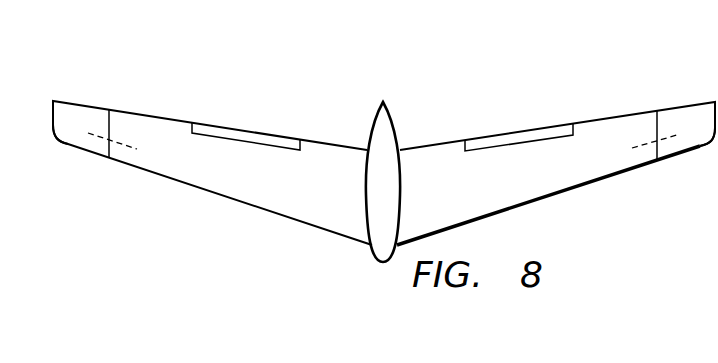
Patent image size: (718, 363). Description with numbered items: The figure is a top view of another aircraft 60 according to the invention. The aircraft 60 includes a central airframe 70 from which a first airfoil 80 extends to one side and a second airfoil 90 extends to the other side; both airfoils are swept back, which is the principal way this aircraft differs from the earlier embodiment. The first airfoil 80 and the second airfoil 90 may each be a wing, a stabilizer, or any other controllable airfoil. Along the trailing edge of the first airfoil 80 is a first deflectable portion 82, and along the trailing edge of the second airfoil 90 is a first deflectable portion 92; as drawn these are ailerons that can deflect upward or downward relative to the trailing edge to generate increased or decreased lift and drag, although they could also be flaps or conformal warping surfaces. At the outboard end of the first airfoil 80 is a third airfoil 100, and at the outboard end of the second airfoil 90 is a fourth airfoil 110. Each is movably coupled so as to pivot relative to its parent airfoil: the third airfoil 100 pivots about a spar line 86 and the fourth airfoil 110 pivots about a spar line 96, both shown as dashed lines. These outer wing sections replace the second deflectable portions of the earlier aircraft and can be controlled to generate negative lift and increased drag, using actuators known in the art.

The aircraft 60 is at (442, 65).
The airframe 70 is at (373, 255).
The first airfoil 80 is at (553, 194).
The first deflectable portion 82 is at (518, 137).
The spar line 86 is at (642, 147).
The second airfoil 90 is at (218, 197).
The first deflectable portion 92 is at (247, 138).
The spar line 96 is at (125, 148).
The third airfoil 100 is at (697, 110).
The fourth airfoil 110 is at (72, 110).